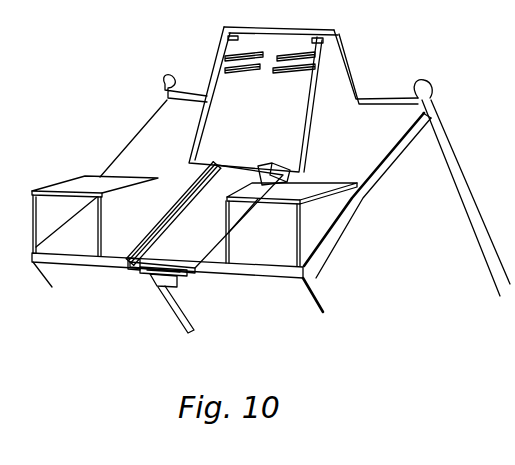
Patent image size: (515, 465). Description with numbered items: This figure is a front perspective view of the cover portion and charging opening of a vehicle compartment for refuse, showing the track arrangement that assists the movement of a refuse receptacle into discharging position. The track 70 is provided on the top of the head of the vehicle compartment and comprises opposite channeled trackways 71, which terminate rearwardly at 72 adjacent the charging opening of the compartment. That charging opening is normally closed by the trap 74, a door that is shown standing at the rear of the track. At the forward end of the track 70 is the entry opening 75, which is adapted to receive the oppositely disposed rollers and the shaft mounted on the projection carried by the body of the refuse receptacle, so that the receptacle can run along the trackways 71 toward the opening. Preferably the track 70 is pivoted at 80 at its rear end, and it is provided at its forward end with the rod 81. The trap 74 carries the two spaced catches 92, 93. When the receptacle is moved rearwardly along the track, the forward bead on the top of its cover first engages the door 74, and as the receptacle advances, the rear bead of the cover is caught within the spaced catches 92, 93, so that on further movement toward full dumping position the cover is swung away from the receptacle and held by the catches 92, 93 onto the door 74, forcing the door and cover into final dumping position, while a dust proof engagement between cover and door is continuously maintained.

The track 70 is at (150, 272).
The channeled trackways 71 is at (212, 230).
The rearward termination of trackways 72 is at (224, 163).
The trap 74 is at (263, 99).
The entry opening 75 is at (130, 268).
The pivot 80 is at (278, 167).
The rod 81 is at (175, 318).
The catch 92 is at (240, 63).
The catch 93 is at (298, 58).